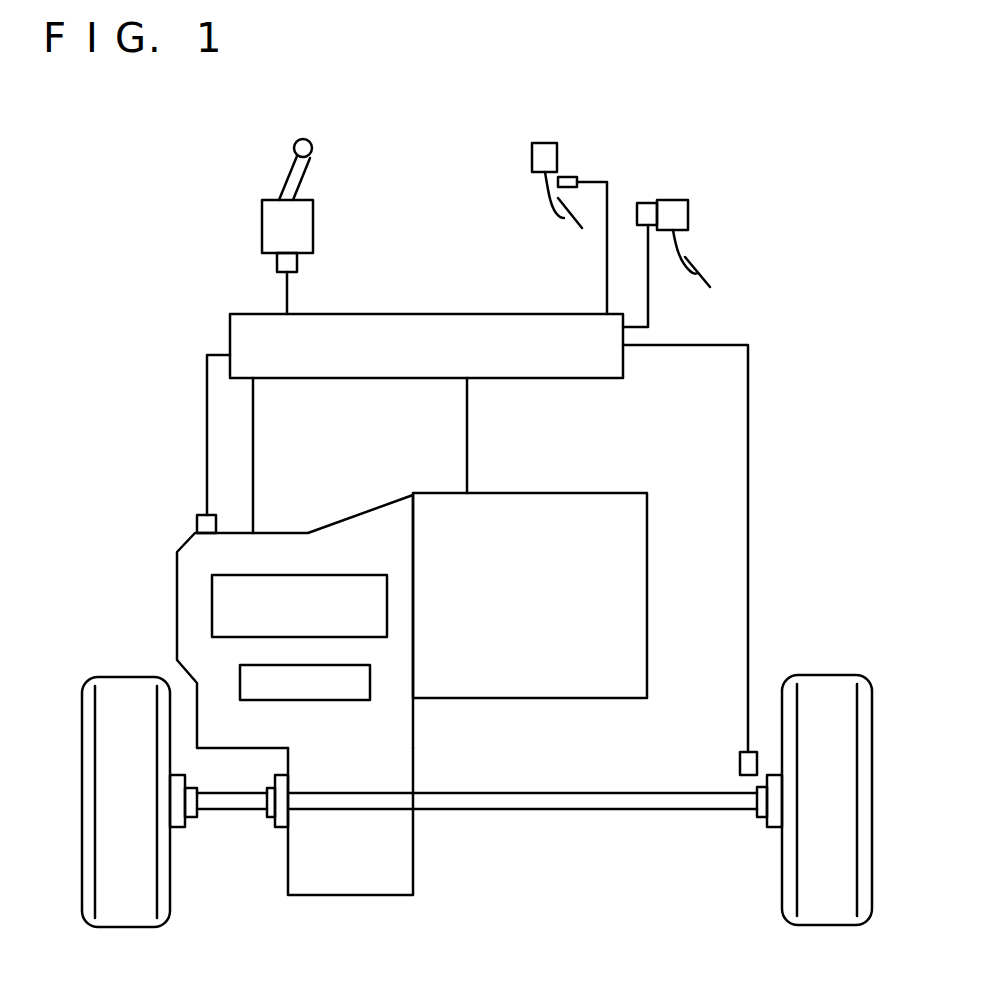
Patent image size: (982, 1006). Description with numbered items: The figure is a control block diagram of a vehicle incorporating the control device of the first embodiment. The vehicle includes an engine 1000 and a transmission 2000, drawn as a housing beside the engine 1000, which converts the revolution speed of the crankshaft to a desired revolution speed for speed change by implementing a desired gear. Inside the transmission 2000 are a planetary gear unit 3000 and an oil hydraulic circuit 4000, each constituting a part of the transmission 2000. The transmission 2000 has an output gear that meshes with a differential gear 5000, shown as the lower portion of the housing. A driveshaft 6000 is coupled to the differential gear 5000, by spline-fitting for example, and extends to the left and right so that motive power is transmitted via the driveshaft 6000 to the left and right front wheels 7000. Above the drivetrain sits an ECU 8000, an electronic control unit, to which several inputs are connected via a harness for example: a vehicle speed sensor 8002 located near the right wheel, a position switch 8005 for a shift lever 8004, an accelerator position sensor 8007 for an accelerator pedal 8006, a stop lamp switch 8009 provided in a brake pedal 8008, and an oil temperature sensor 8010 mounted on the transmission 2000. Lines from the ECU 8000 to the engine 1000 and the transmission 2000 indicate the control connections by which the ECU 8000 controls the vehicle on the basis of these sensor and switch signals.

The engine 1000 is at (548, 493).
The transmission 2000 is at (287, 533).
The planetary gear unit 3000 is at (307, 575).
The oil hydraulic circuit 4000 is at (333, 703).
The differential gear 5000 is at (348, 897).
The driveshaft 6000 is at (232, 810).
The front wheel 7000 is at (120, 677).
The ECU 8000 is at (510, 313).
The vehicle speed sensor 8002 is at (740, 759).
The shift lever 8004 is at (307, 163).
The position switch 8005 is at (277, 266).
The accelerator pedal 8006 is at (676, 238).
The accelerator position sensor 8007 is at (648, 202).
The brake pedal 8008 is at (553, 211).
The stop lamp switch 8009 is at (568, 176).
The oil temperature sensor 8010 is at (197, 523).